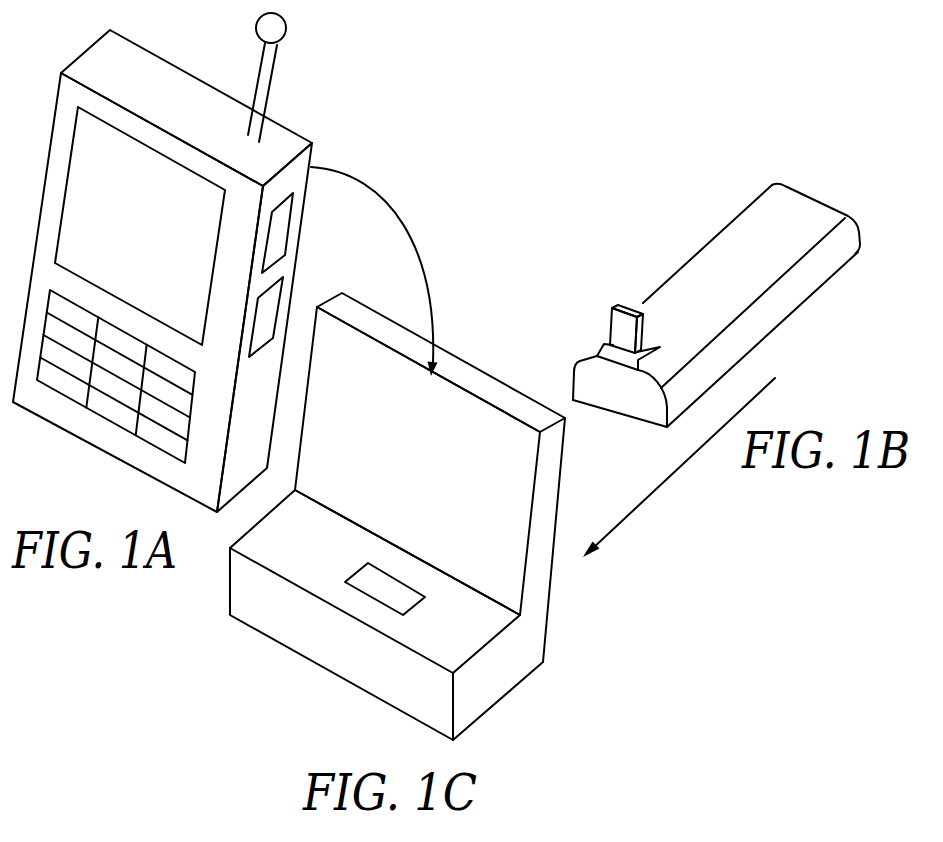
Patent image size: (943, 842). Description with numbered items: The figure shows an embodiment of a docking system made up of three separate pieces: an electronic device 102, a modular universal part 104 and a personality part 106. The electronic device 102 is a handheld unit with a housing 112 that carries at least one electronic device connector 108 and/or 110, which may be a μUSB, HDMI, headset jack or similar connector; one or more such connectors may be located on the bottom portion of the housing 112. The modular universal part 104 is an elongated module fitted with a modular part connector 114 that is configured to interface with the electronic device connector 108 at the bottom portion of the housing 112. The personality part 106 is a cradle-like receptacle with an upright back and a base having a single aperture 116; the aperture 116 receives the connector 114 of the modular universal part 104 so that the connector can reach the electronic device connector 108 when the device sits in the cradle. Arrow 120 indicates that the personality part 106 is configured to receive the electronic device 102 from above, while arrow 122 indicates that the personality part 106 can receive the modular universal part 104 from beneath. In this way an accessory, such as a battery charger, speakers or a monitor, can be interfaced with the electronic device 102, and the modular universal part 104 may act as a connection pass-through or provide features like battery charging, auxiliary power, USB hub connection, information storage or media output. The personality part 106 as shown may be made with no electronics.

In FIG. 1A, the electronic device 102 is at (177, 262).
In FIG. 1B, the modular universal part 104 is at (716, 300).
In FIG. 1C, the personality part 106 is at (397, 516).
In FIG. 1A, the electronic device connector 108 is at (312, 233).
In FIG. 1A, the electronic device connector 110 is at (305, 305).
In FIG. 1A, the housing 112 is at (116, 403).
In FIG. 1B, the modular part connector 114 is at (606, 315).
In FIG. 1C, the aperture 116 is at (443, 650).
In FIG. 1C, the arrow 120 is at (389, 271).
In FIG. 1B, the arrow 122 is at (679, 467).